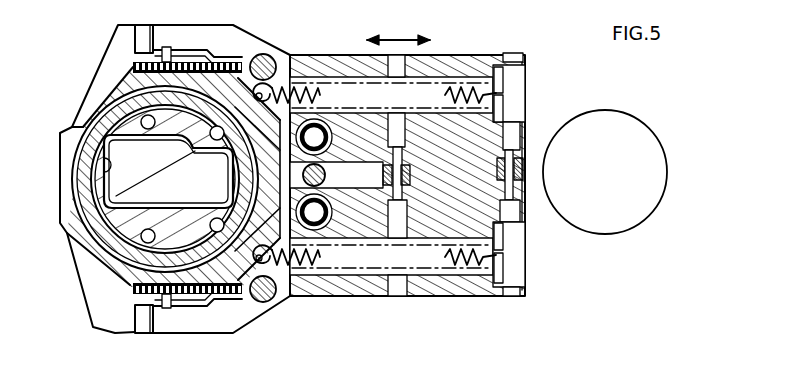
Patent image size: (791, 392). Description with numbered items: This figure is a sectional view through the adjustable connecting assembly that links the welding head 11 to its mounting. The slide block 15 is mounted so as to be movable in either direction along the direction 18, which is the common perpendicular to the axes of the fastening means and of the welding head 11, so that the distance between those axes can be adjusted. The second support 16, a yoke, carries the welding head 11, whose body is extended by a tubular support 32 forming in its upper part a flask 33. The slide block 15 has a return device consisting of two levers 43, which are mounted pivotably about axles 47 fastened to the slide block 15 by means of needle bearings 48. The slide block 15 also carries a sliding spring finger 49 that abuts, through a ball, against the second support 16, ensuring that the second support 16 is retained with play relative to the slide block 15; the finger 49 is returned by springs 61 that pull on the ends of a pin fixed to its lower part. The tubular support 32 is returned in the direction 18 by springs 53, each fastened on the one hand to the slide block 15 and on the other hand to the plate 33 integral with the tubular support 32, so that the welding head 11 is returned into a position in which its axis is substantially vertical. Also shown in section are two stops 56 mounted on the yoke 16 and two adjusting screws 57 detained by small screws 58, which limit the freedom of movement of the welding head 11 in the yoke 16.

The welding head 11 is at (103, 164).
The slide block 15 is at (448, 66).
The second support 16 is at (243, 44).
The direction 18 is at (393, 38).
The tubular support 32 is at (110, 278).
The flask 33 is at (100, 45).
The levers 43 is at (411, 176).
The axles 47 is at (399, 137).
The needle bearings 48 is at (386, 171).
The sliding spring finger 49 is at (316, 165).
The springs 53 is at (474, 90).
The stops 56 is at (273, 56).
The adjusting screws 57 is at (219, 60).
The small screws 58 is at (167, 47).
The springs 61 is at (320, 120).